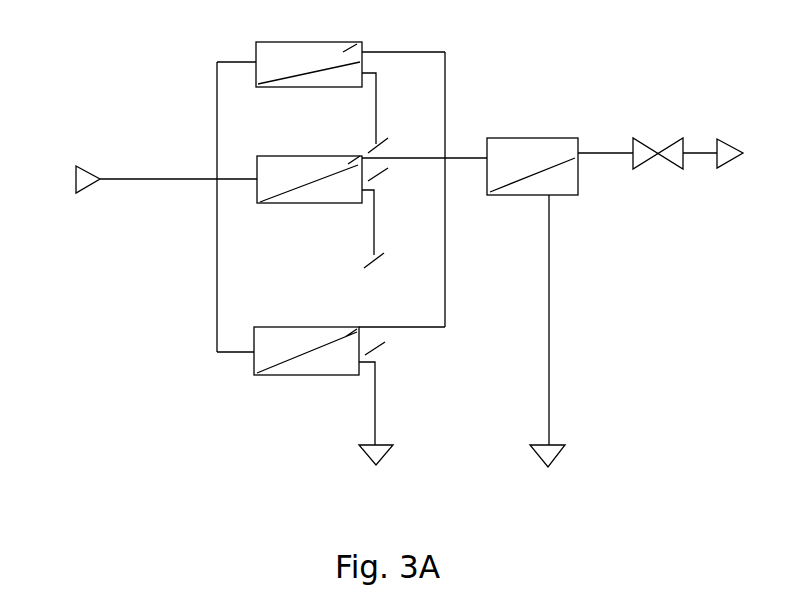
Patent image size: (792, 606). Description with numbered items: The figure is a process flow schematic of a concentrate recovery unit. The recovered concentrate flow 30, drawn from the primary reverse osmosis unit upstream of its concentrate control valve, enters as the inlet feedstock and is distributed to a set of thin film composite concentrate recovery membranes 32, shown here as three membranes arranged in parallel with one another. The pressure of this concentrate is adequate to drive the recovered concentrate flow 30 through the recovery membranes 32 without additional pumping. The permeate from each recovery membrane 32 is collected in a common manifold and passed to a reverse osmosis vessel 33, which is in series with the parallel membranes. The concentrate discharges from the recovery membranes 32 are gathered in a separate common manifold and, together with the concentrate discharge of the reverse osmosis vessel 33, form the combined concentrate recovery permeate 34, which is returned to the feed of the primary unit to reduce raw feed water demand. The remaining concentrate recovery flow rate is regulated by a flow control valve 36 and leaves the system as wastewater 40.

The recovered concentrate flow 30 is at (147, 180).
The thin film recovery membranes 32 is at (352, 226).
The reverse osmosis vessel 33 is at (560, 275).
The combined concentrate recovery permeate 34 is at (462, 474).
The flow control valve 36 is at (675, 169).
The wastewater 40 is at (747, 152).